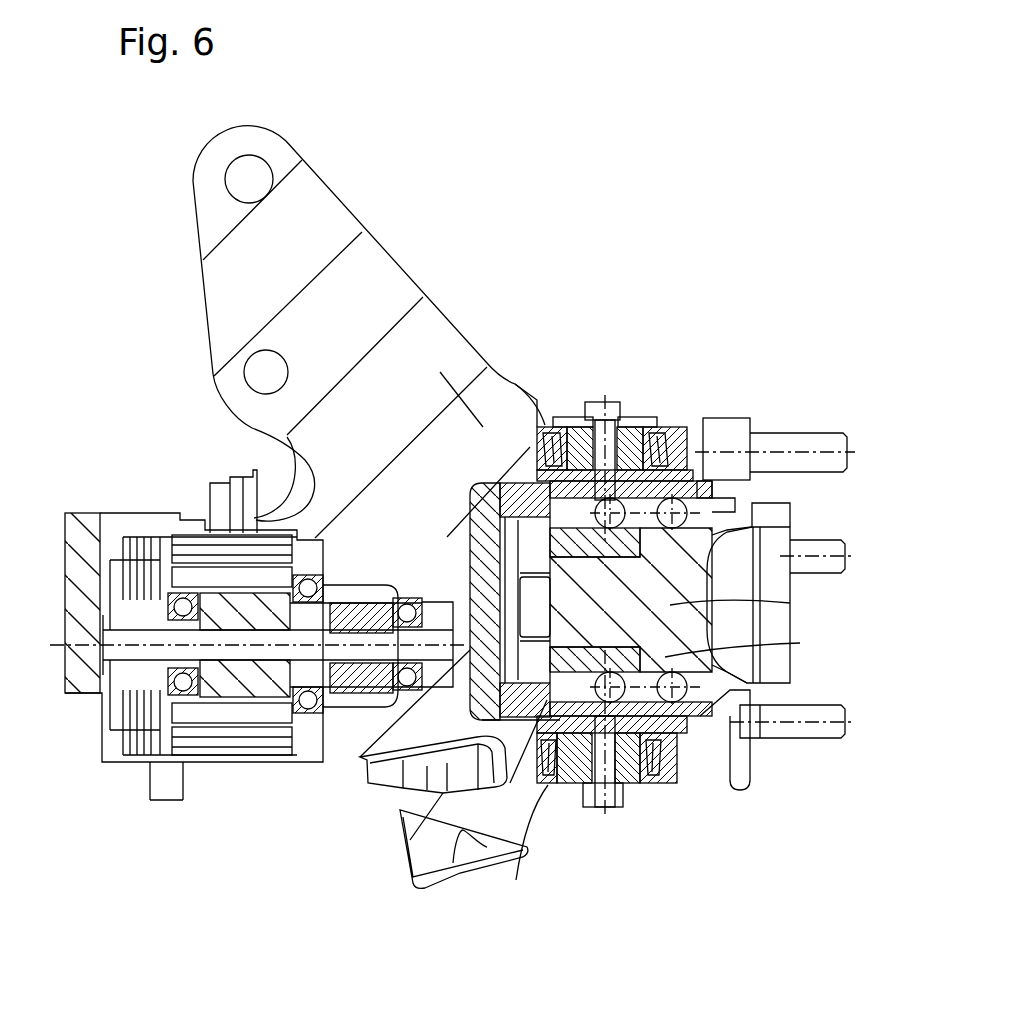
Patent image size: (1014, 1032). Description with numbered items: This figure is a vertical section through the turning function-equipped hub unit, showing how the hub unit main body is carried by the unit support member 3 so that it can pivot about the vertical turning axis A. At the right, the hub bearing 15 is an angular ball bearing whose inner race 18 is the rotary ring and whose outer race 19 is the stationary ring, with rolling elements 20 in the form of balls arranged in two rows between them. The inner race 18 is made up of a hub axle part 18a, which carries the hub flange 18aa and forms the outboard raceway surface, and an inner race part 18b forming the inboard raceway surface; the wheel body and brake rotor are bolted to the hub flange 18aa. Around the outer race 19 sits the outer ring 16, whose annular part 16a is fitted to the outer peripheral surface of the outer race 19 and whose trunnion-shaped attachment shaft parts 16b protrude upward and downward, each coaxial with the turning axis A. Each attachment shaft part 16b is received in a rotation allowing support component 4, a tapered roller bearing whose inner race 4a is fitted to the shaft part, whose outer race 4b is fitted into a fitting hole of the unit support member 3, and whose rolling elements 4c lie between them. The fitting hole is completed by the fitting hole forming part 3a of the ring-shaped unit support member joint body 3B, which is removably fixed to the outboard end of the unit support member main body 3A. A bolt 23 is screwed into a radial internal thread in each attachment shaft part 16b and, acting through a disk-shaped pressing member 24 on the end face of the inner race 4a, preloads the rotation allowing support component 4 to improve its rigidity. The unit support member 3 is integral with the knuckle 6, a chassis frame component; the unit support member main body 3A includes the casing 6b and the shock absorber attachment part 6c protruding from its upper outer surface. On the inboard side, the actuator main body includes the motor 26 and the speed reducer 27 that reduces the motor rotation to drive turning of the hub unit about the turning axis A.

The unit support member 3 is at (465, 484).
The unit support member main body 3A is at (528, 437).
The unit support member joint body 3B is at (733, 757).
The fitting hole forming part 3a is at (667, 420).
The rotation allowing support component 4 is at (497, 210).
The inner race 4a is at (580, 420).
The outer race 4b is at (530, 425).
The rolling elements 4c is at (568, 420).
The knuckle 6 is at (362, 188).
The casing 6b is at (352, 522).
The shock absorber attachment part 6c is at (247, 270).
The hub bearing 15 is at (875, 307).
The outer ring 16 is at (547, 955).
The annular part 16a is at (493, 783).
The attachment shaft part 16b is at (632, 420).
The inner race 18 is at (795, 440).
The hub axle part 18a is at (713, 603).
The inner race part 18b is at (747, 643).
The hub flange 18aa is at (745, 498).
The outer race 19 is at (697, 475).
The rolling elements 20 is at (745, 470).
The bolt 23 is at (605, 402).
The pressing member 24 is at (647, 420).
The motor 26 is at (227, 790).
The speed reducer 27 is at (353, 693).
The turning axis A is at (573, 810).